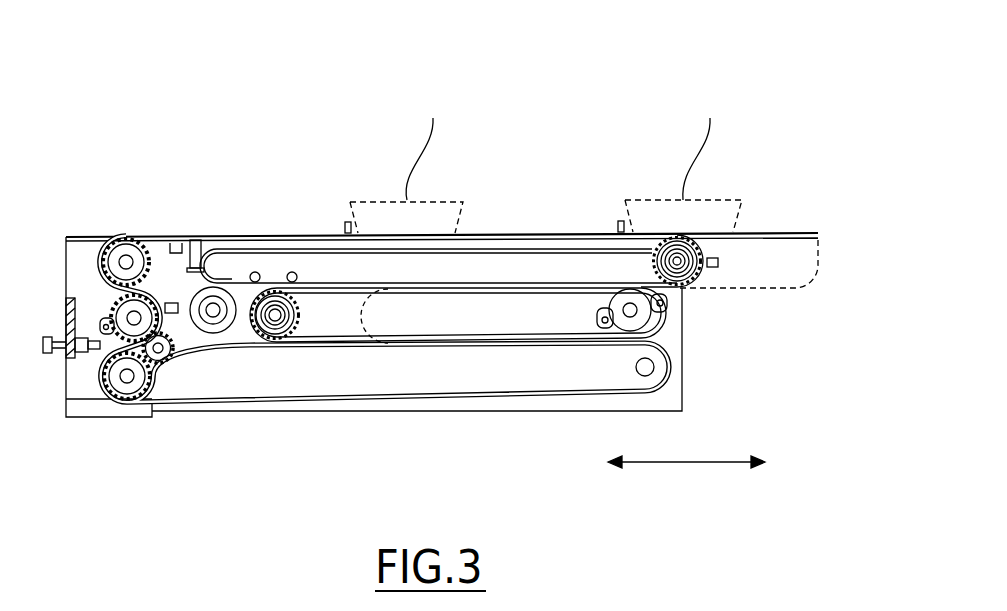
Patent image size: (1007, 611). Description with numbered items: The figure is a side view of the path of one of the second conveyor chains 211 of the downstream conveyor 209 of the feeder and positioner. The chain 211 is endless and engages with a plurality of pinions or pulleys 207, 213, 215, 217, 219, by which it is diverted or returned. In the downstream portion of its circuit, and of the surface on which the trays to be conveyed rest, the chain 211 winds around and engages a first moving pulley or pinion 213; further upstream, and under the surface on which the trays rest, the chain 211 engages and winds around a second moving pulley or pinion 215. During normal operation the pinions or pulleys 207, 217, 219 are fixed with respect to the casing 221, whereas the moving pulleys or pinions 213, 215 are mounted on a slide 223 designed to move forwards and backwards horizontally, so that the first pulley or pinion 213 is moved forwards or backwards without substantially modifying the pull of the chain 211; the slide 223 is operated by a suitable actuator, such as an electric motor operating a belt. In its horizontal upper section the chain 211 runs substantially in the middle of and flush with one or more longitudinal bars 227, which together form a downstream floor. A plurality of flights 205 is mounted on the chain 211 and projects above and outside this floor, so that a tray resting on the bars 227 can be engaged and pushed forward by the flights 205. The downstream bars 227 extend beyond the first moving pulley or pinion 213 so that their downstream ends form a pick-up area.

The flights 205 is at (345, 225).
The pinion or pulley 207 is at (125, 250).
The downstream conveyor 209 is at (380, 183).
The second conveyor chain 211 is at (452, 396).
The first moving pulley or pinion 213 is at (680, 262).
The second moving pulley or pinion 215 is at (297, 325).
The pinion or pulley 217 is at (112, 302).
The pinion or pulley 219 is at (160, 395).
The casing 221 is at (62, 392).
The slide 223 is at (486, 268).
The longitudinal bar 227 is at (773, 232).